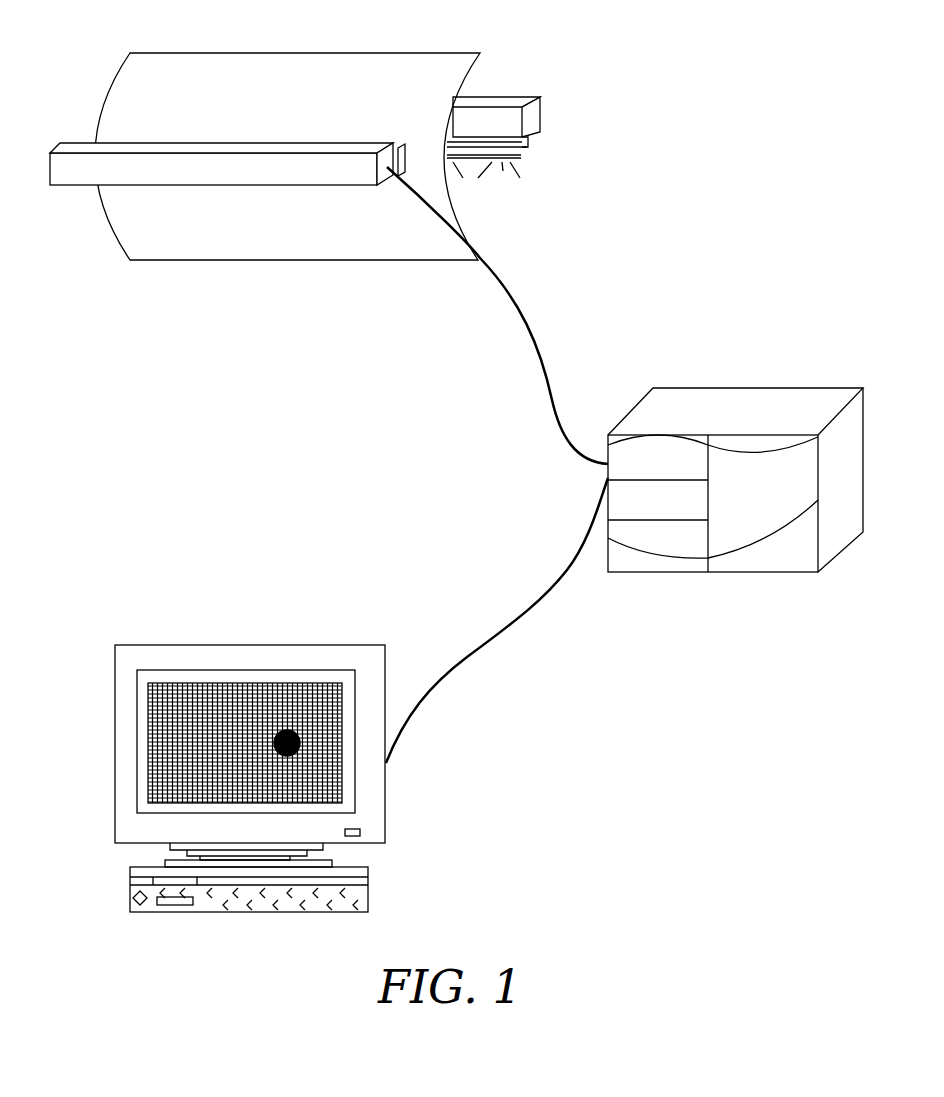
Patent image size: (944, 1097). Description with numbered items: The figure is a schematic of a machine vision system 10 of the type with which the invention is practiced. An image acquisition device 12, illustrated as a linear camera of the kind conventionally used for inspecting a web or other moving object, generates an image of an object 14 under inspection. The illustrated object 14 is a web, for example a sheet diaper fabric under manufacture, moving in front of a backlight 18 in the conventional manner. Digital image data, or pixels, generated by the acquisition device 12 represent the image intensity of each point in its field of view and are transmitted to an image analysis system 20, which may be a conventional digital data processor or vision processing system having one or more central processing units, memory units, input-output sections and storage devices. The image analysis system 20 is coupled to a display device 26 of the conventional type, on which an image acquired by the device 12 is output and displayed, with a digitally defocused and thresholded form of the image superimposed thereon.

The machine vision system 10 is at (600, 62).
The image acquisition device 12 is at (63, 178).
The object 14 is at (176, 66).
The backlight 18 is at (509, 102).
The image analysis system 20 is at (734, 352).
The display device 26 is at (176, 655).